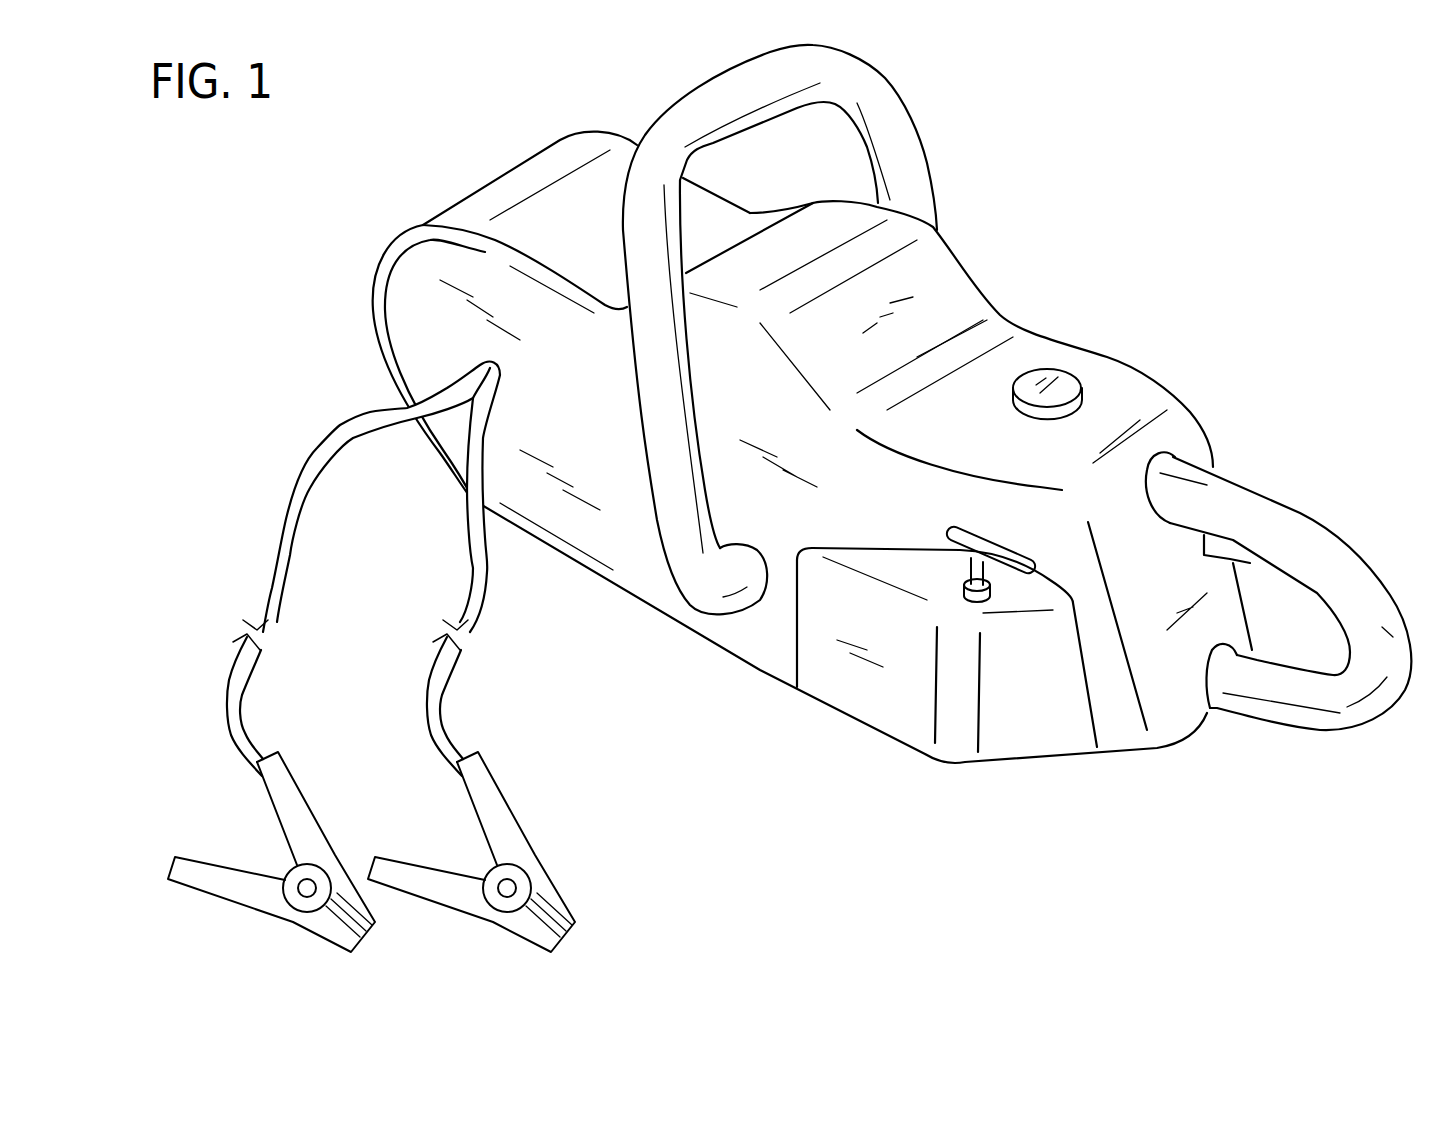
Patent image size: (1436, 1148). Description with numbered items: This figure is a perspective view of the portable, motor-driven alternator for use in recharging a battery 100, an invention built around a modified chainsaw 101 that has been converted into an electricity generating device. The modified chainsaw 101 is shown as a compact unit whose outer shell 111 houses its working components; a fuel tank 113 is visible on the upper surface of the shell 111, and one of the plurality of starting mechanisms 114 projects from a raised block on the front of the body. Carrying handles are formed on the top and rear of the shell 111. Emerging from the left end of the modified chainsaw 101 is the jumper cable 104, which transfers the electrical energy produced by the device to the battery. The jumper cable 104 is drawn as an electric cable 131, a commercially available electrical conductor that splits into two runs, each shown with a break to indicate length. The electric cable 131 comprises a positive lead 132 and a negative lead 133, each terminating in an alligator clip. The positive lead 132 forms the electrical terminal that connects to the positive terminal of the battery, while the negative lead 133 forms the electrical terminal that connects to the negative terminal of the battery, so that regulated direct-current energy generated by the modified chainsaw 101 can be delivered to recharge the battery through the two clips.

The portable, motor-driven alternator for use in recharging a battery 100 is at (1187, 177).
The modified chainsaw 101 is at (1053, 338).
The jumper cable 104 is at (270, 552).
The shell 111 is at (1147, 400).
The fuel tank 113 is at (1073, 380).
The plurality of starting mechanisms 114 is at (990, 547).
The electric cable 131 is at (470, 566).
The positive lead 132 is at (378, 930).
The negative lead 133 is at (574, 927).